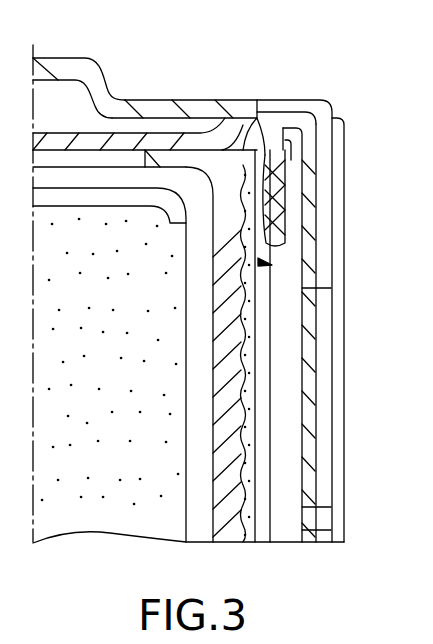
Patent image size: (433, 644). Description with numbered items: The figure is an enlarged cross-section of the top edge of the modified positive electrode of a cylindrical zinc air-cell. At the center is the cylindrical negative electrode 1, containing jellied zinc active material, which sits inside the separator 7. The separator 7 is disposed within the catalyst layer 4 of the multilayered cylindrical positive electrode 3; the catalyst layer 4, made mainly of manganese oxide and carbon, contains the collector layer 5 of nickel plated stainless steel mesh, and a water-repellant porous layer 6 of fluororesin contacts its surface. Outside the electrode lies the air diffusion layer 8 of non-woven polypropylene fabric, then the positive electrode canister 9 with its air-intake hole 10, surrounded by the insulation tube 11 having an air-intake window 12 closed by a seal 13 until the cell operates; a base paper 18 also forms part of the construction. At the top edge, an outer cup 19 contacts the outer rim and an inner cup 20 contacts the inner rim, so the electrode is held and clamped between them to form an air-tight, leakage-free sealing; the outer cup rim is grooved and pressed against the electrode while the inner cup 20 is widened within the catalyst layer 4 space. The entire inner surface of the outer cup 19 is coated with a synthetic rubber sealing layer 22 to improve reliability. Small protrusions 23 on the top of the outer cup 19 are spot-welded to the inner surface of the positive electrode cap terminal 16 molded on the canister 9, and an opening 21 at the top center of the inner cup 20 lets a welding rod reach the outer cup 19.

The cylindrical negative electrode 1 is at (125, 520).
The multilayered cylindrical positive electrode 3 is at (272, 265).
The catalyst layer 4 is at (247, 535).
The collector layer 5 is at (240, 473).
The water-repellant porous layer 6 is at (260, 528).
The separator 7 is at (210, 310).
The air diffusion layer 8 is at (280, 527).
The positive electrode canister 9 is at (313, 415).
The air-intake hole 10 is at (310, 280).
The insulation tube 11 is at (327, 108).
The air-intake window 12 is at (323, 522).
The seal 13 is at (336, 222).
The positive electrode cap terminal 16 is at (238, 107).
The base paper 18 is at (92, 197).
The outer cup 19 is at (290, 150).
The inner cup 20 is at (165, 153).
The opening 21 is at (53, 157).
The sealing layer 22 is at (280, 187).
The small protrusions 23 is at (247, 112).